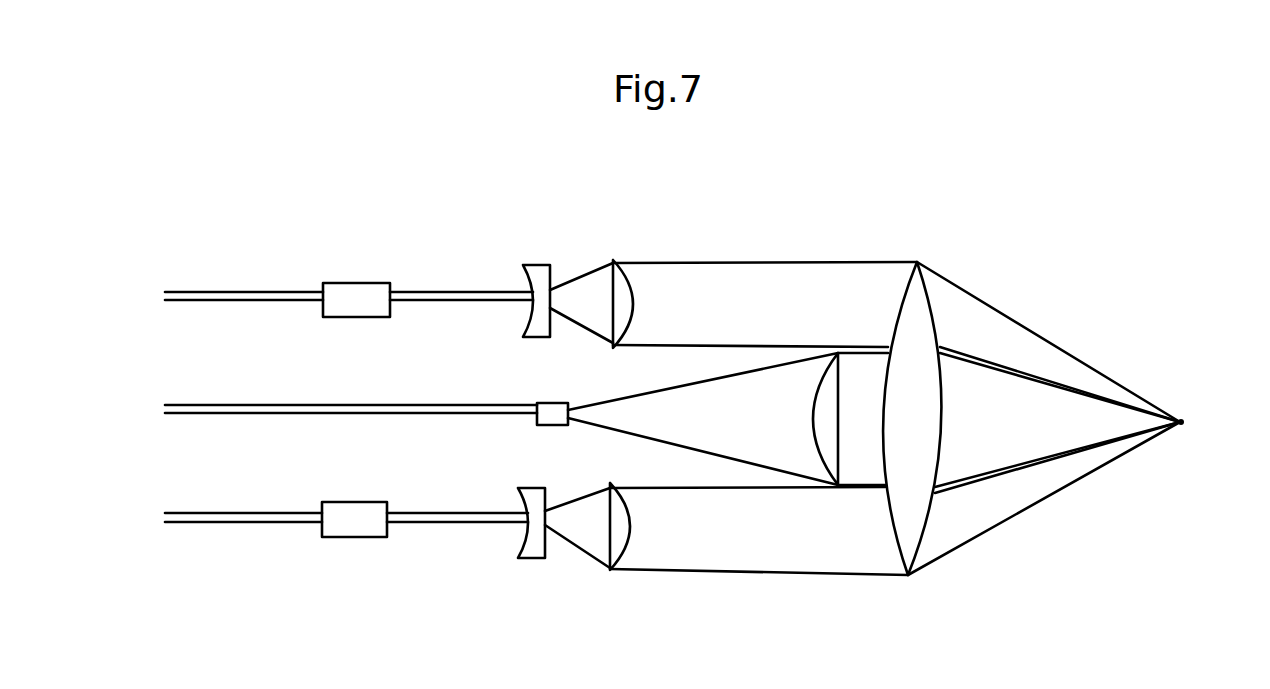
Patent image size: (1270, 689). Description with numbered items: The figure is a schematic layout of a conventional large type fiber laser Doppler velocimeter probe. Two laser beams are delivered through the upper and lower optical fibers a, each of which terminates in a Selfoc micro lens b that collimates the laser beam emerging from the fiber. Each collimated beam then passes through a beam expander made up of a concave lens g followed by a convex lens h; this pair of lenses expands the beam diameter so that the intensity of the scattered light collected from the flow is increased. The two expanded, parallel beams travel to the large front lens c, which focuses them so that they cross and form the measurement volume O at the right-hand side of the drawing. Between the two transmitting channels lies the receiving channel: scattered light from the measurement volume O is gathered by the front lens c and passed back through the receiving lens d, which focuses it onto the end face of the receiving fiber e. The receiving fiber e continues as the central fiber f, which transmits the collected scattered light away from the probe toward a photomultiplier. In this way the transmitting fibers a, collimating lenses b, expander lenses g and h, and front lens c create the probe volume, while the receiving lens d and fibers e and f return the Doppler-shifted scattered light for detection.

The optical fiber a is at (213, 292).
The Selfoc micro lens b is at (350, 283).
The front lens c is at (930, 318).
The collimating lens d is at (813, 428).
The receiving fiber e is at (539, 403).
The optical fiber f is at (270, 403).
The beam expander lens g is at (537, 265).
The beam expander lens h is at (637, 272).
The measurement volume O is at (1185, 422).